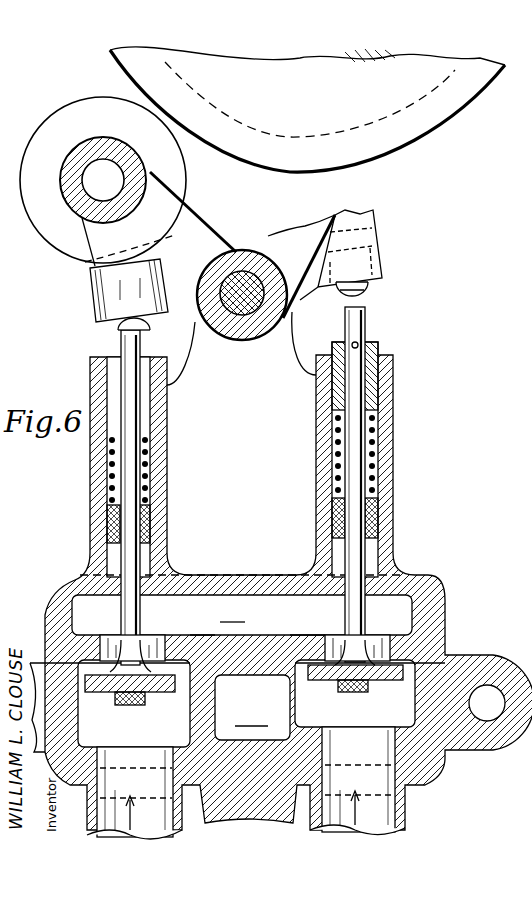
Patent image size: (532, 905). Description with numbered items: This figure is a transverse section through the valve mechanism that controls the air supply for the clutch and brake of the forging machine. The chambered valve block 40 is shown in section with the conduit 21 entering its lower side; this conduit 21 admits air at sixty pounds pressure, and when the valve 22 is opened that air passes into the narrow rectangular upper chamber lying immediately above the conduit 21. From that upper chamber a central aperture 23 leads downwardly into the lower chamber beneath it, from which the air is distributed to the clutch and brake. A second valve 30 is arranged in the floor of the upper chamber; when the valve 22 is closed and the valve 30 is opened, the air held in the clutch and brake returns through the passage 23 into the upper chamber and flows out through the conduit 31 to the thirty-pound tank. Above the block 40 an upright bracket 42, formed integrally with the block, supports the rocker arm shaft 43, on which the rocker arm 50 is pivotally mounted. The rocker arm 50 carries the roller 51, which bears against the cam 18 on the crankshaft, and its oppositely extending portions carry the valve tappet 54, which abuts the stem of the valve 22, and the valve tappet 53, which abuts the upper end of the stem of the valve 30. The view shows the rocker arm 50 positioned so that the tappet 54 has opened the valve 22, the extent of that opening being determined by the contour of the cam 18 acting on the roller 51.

The cam 18 is at (307, 109).
The conduit 21 is at (178, 823).
The valve 22 is at (128, 560).
The central aperture 23 is at (262, 637).
The valve 30 is at (365, 568).
The conduit 31 is at (390, 805).
The chambered valve block 40 is at (440, 640).
The upright bracket 42 is at (226, 428).
The rocker arm shaft 43 is at (268, 248).
The rocker arm 50 is at (215, 265).
The roller 51 is at (43, 192).
The valve tappet 53 is at (370, 288).
The valve tappet 54 is at (116, 326).